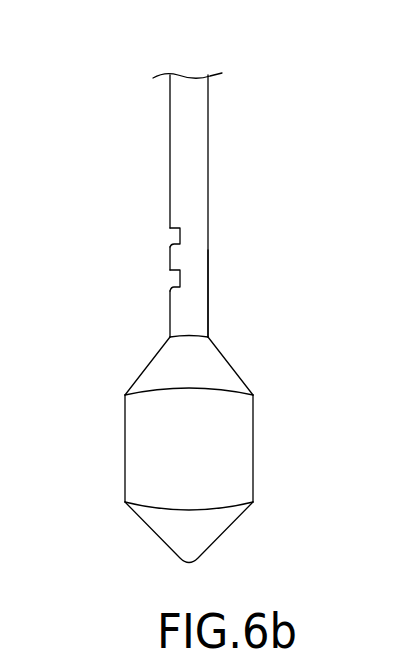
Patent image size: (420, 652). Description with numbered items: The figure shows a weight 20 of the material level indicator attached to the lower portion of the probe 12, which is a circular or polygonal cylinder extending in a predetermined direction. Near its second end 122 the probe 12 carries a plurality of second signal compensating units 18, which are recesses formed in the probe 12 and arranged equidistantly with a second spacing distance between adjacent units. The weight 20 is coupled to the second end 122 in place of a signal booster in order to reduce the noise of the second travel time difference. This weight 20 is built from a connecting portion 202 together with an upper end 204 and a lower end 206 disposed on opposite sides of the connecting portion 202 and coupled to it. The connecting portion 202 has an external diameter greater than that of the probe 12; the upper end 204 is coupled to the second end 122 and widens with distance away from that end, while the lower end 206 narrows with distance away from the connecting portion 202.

The probe 12 is at (212, 169).
The second signal compensating unit 18 is at (168, 233).
The second end 122 is at (200, 280).
The weight 20 is at (201, 445).
The upper end 204 is at (155, 372).
The connecting portion 202 is at (137, 444).
The lower end 206 is at (157, 528).